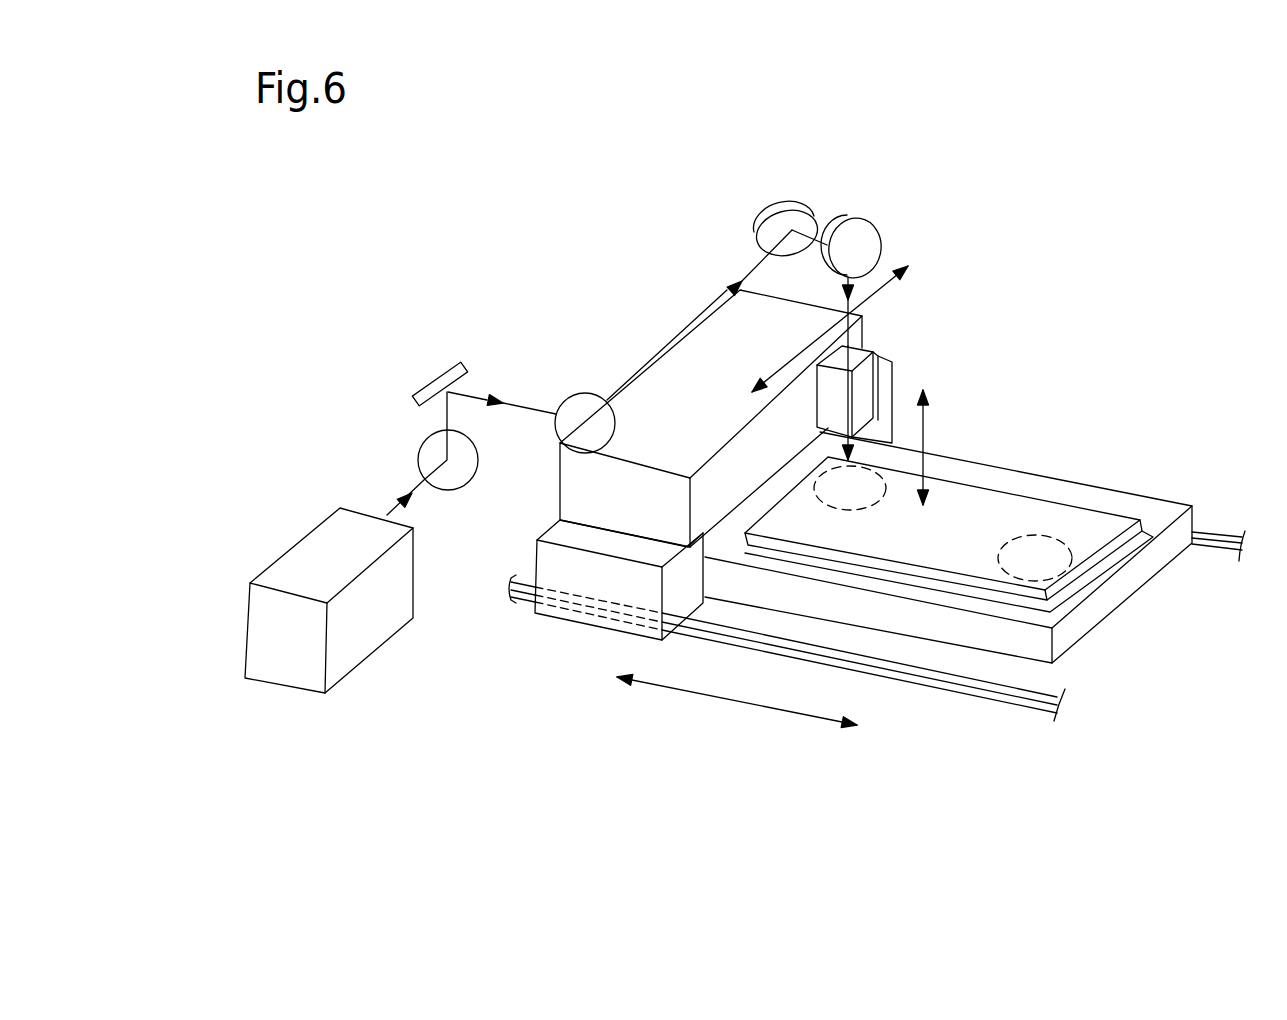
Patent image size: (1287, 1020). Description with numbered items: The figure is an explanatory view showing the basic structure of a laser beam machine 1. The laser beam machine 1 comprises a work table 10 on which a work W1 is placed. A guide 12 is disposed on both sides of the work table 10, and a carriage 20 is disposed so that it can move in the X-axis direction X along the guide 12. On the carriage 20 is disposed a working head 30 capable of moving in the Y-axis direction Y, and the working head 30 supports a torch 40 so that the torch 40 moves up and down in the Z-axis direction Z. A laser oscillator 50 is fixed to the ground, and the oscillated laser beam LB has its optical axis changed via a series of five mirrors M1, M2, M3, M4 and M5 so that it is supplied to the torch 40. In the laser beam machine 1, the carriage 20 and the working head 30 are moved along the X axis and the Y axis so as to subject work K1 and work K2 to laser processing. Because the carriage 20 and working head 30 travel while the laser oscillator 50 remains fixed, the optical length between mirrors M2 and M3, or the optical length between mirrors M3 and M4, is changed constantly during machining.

The laser beam machine 1 is at (1037, 288).
The work table 10 is at (1100, 610).
The guide 12 is at (962, 687).
The carriage 20 is at (565, 613).
The working head 30 is at (878, 352).
The torch 40 is at (890, 420).
The laser oscillator 50 is at (302, 672).
The laser beam LB is at (423, 487).
The mirror M1 is at (428, 454).
The mirror M2 is at (430, 385).
The mirror M3 is at (583, 408).
The mirror M4 is at (783, 210).
The mirror M5 is at (862, 230).
The work W1 is at (995, 507).
The work K1 is at (852, 502).
The work K2 is at (1052, 552).
The X-axis direction X is at (737, 698).
The Y-axis direction Y is at (830, 312).
The Z-axis direction Z is at (933, 447).